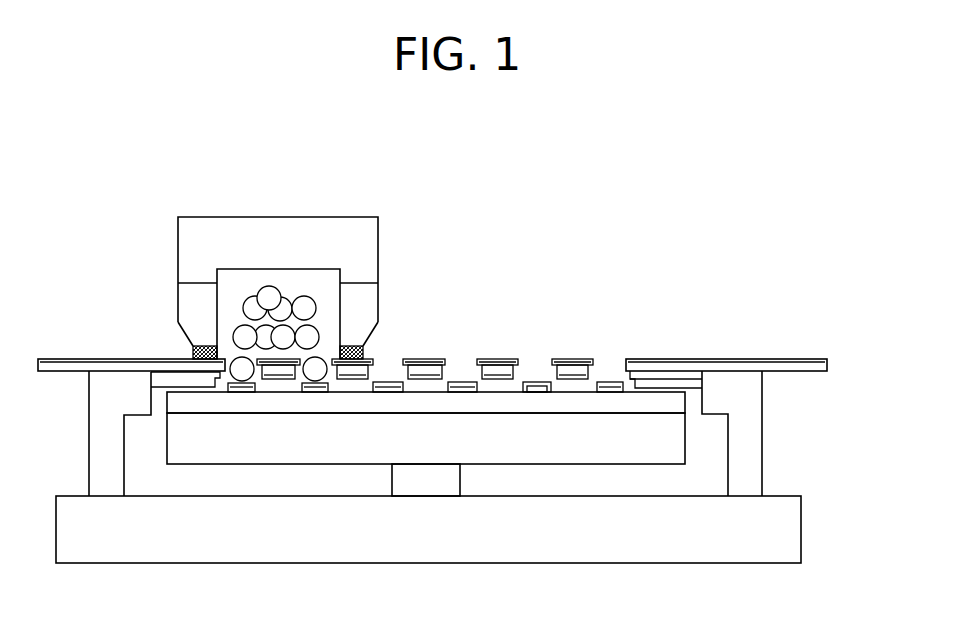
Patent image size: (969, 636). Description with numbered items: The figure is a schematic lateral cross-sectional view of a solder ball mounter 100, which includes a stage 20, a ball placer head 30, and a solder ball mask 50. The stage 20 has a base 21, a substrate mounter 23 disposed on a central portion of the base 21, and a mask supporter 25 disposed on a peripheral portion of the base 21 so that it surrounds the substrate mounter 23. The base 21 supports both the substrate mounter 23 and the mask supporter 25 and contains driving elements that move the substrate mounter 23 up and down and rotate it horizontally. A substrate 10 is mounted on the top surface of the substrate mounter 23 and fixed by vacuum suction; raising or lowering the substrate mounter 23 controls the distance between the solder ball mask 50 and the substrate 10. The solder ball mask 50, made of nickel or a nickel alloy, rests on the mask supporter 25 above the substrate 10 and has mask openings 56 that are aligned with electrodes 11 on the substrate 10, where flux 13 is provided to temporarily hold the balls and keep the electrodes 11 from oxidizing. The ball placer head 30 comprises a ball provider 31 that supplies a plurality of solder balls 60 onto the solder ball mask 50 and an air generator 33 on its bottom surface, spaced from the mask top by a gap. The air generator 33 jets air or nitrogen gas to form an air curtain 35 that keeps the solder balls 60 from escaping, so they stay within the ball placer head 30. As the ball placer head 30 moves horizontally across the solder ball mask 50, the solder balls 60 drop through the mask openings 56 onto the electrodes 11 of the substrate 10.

The solder ball mounter 100 is at (433, 200).
The substrate 10 is at (445, 400).
The electrodes 11 is at (531, 382).
The flux 13 is at (541, 388).
The stage 20 is at (478, 467).
The base 21 is at (785, 522).
The substrate mounter 23 is at (673, 442).
The mask supporter 25 is at (492, 433).
The ball placer head 30 is at (217, 288).
The ball provider 31 is at (190, 253).
The air generator 33 is at (190, 295).
The air curtain 35 is at (193, 355).
The solder ball mask 50 is at (780, 358).
The mask openings 56 is at (610, 358).
The solder balls 60 is at (267, 288).